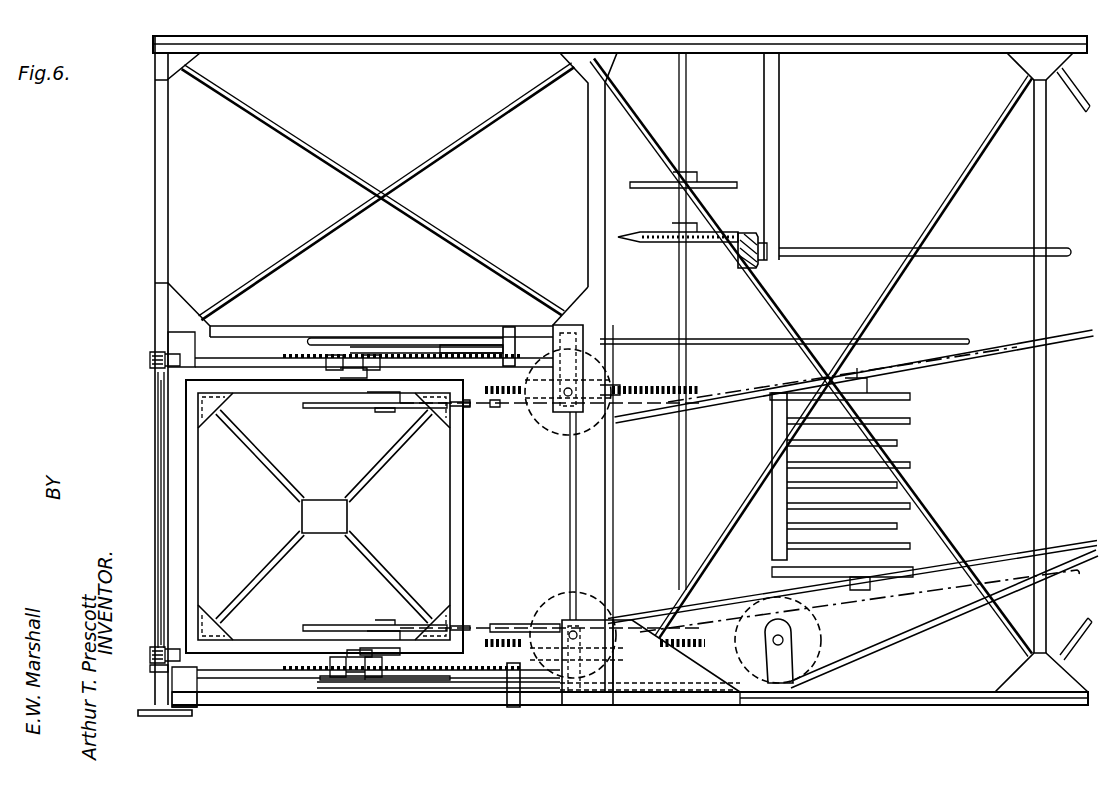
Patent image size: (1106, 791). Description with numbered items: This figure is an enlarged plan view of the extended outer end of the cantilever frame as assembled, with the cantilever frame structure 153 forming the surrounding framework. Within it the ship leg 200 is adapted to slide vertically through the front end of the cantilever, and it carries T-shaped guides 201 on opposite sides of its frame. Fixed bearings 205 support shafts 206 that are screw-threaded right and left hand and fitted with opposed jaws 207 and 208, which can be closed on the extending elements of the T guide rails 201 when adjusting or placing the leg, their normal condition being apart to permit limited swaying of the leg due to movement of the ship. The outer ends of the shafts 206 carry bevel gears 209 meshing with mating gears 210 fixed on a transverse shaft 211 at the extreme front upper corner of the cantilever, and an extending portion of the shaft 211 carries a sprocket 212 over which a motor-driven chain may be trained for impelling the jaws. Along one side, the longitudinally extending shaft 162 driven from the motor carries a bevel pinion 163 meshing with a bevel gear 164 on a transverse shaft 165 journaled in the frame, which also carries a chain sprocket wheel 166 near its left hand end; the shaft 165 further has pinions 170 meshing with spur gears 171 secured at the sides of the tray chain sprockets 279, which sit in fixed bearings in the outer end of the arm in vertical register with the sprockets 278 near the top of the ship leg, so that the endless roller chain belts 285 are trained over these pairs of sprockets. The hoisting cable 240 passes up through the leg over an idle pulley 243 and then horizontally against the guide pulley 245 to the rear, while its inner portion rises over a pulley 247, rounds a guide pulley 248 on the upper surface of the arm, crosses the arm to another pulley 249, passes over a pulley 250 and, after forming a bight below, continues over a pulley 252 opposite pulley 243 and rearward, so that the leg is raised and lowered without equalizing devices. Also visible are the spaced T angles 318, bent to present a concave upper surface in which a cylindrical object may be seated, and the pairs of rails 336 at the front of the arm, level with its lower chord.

The frame 153 is at (879, 46).
The shaft 162 is at (880, 257).
The bevel pinion 163 is at (762, 242).
The bevel gear 164 is at (660, 242).
The transverse shaft 165 is at (688, 318).
The chain sprocket wheel 166 is at (722, 183).
The pinions 170 is at (725, 693).
The spur gears 171 is at (505, 636).
The ship leg 200 is at (463, 505).
The T-shaped guides 201 is at (357, 650).
The bearings 205 is at (158, 362).
The shafts 206 is at (232, 356).
The jaw 207 is at (366, 680).
The jaw 208 is at (330, 373).
The bevel gears 209 is at (181, 712).
The mating gears 210 is at (157, 670).
The transverse shaft 211 is at (158, 440).
The sprocket 212 is at (152, 720).
The cable 240 is at (908, 338).
The idle pulley 243 is at (322, 690).
The guide pulley 245 is at (822, 633).
The pulley 247 is at (436, 693).
The guide pulley 248 is at (556, 662).
The pulley 249 is at (555, 422).
The pulley 250 is at (491, 345).
The pulley 252 is at (313, 340).
The sprockets 278 is at (322, 625).
The sprockets 279 is at (482, 407).
The endless roller chain belts 285 is at (1000, 345).
The T angles 318 is at (910, 463).
The rails 336 is at (950, 373).